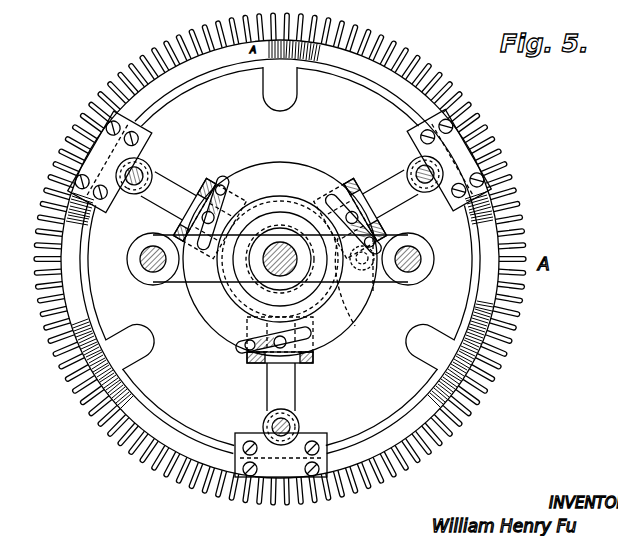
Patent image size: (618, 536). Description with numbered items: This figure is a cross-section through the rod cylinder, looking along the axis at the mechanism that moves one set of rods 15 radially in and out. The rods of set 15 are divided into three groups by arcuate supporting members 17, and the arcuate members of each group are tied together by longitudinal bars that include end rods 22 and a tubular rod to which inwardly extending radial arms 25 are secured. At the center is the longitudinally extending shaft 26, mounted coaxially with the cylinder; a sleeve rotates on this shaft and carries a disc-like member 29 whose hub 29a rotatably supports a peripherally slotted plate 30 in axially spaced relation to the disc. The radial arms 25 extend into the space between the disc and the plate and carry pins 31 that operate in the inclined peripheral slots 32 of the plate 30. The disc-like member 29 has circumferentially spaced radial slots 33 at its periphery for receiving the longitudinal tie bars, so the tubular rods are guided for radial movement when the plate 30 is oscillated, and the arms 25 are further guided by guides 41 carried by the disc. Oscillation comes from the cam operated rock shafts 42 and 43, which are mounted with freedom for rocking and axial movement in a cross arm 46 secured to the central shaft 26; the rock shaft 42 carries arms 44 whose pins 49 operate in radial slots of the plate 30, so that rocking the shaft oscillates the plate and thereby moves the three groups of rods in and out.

The set of rods 15 is at (124, 101).
The arcuate supporting member 17 is at (157, 47).
The end rod 22 is at (143, 173).
The radial arm 25 is at (180, 187).
The shaft 26 is at (268, 262).
The disc-like member 29 is at (487, 235).
The hub 29a is at (272, 218).
The peripherally slotted plate 30 is at (352, 340).
The pin 31 is at (190, 213).
The inclined peripheral slot 32 is at (226, 190).
The radial slot 33 is at (272, 88).
The guide 41 is at (213, 181).
The rock shaft 42 is at (423, 257).
The rock shaft 43 is at (143, 265).
The arm 44 is at (373, 290).
The cross arm 46 is at (180, 284).
The pin 49 is at (362, 307).